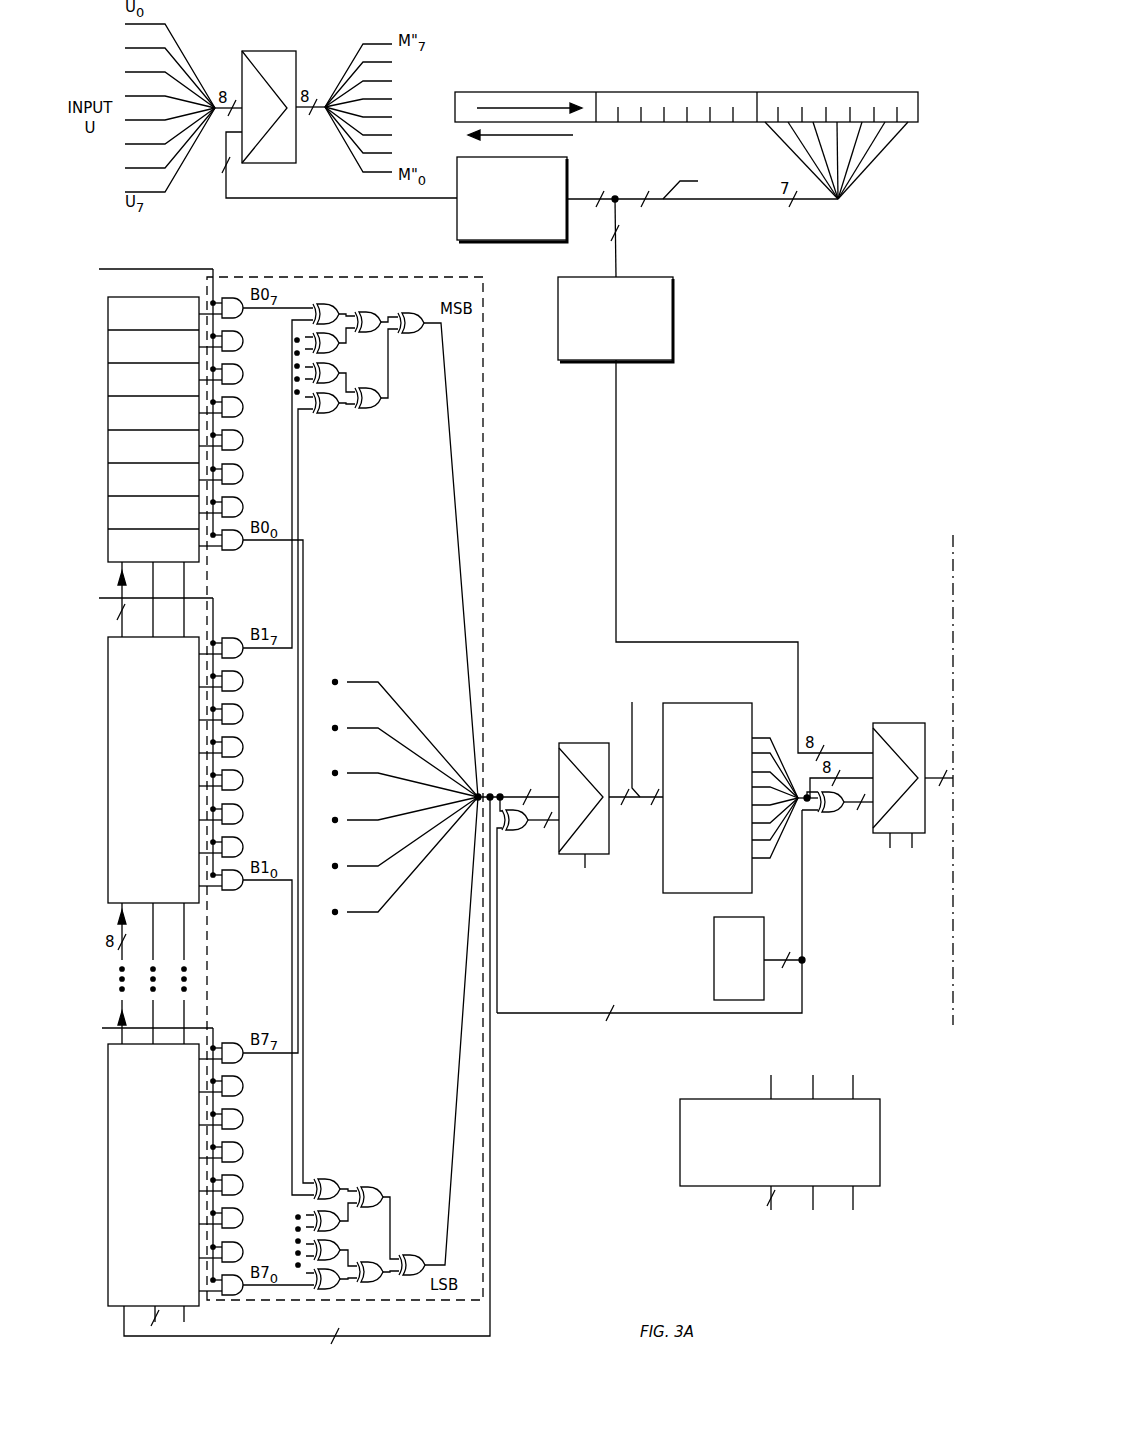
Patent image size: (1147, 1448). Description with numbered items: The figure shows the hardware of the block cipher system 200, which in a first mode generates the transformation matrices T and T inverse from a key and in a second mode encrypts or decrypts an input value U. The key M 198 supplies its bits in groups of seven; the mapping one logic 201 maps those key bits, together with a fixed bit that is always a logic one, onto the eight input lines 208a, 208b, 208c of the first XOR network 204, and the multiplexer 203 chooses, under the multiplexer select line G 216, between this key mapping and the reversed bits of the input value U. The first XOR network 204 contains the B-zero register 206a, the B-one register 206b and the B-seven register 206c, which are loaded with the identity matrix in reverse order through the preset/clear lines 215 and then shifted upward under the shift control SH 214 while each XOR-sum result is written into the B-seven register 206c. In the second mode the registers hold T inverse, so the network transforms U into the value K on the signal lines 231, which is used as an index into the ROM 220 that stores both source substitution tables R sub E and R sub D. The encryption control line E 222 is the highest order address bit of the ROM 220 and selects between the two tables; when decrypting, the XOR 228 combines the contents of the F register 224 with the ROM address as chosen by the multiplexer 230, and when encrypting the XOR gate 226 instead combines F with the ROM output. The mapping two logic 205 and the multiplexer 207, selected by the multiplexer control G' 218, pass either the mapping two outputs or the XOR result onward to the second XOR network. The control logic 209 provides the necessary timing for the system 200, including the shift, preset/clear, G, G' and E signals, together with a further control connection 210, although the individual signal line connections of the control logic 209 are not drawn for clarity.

The key M 198 is at (768, 92).
The block cipher system 200 is at (652, 48).
The mapping one logic 201 is at (455, 218).
The multiplexer 203 is at (262, 50).
The first XOR network 204 is at (512, 211).
The mapping two logic 205 is at (673, 312).
The B0 register 206a is at (108, 370).
The B1 register 206b is at (108, 742).
The B7 register 206c is at (108, 1163).
The multiplexer 207 is at (900, 723).
The input line 208a is at (115, 1022).
The input line 208b is at (118, 592).
The input line 208c is at (143, 266).
The control logic 209 is at (880, 1137).
The G control signal 210 is at (813, 1085).
The shift control SH 214 is at (185, 1318).
The preset/clear lines 215 is at (157, 1322).
The multiplexer select line G 216 is at (262, 165).
The multiplexer control G' 218 is at (890, 848).
The ROM 220 is at (700, 893).
The encryption control line E 222 is at (632, 714).
The F register 224 is at (714, 982).
The XOR gate 226 is at (820, 816).
The XOR 228 is at (510, 835).
The multiplexer 230 is at (598, 743).
The signal lines 231 is at (549, 797).